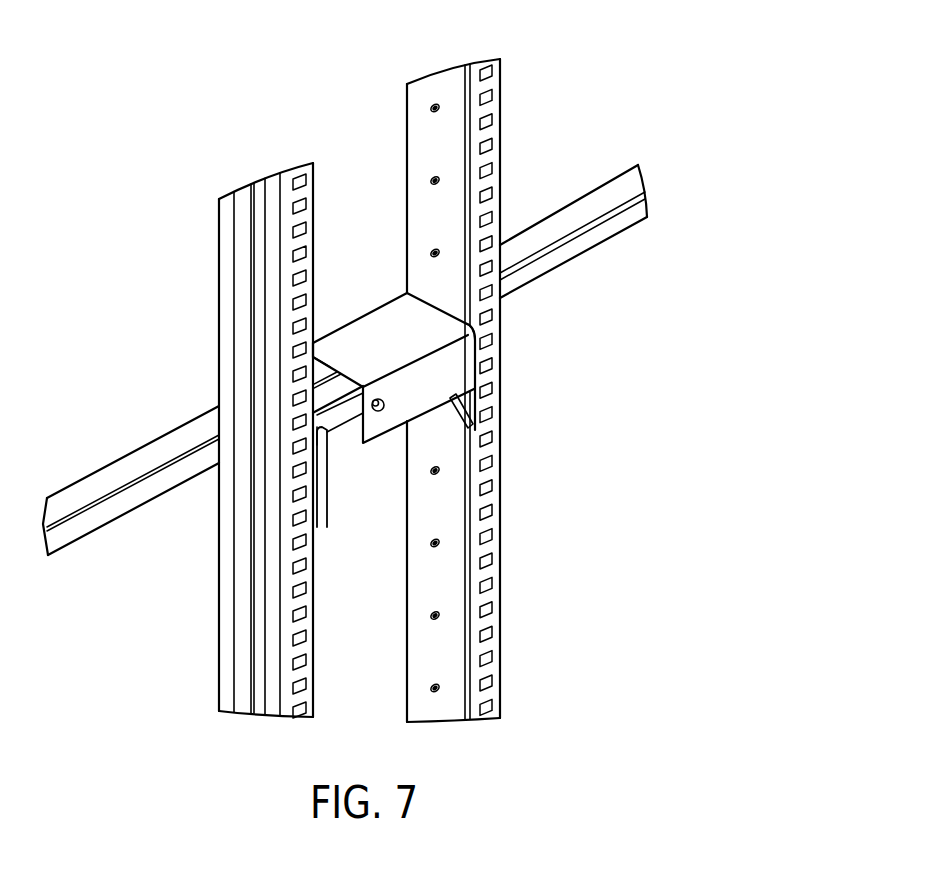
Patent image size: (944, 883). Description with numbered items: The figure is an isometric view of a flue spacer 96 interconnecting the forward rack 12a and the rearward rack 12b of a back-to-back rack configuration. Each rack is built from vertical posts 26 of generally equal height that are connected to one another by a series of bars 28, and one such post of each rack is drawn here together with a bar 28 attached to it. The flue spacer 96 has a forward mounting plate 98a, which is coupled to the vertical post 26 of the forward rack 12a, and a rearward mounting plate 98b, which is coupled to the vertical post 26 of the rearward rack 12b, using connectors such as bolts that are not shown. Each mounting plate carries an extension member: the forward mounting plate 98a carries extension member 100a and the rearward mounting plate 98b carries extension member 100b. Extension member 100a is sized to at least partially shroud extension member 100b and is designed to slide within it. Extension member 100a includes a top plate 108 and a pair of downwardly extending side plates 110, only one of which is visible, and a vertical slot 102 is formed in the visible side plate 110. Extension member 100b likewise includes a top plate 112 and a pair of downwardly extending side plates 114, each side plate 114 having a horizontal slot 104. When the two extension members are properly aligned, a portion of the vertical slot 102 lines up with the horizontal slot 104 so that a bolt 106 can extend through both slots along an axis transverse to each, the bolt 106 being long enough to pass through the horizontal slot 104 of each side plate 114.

The forward rack 12a is at (577, 113).
The rearward rack 12b is at (150, 303).
The vertical post 26 is at (442, 85).
The bar 28 is at (585, 200).
The flue spacer 96 is at (343, 222).
The forward mounting plate 98a is at (458, 354).
The rearward mounting plate 98b is at (319, 530).
The extension member 100a is at (378, 302).
The extension member 100b is at (348, 440).
The vertical slot 102 is at (385, 406).
The horizontal slot 104 is at (338, 395).
The bolt 106 is at (416, 410).
The top plate 108 is at (325, 346).
The side plate 110 is at (480, 350).
The top plate 112 is at (322, 377).
The side plate 114 is at (333, 438).